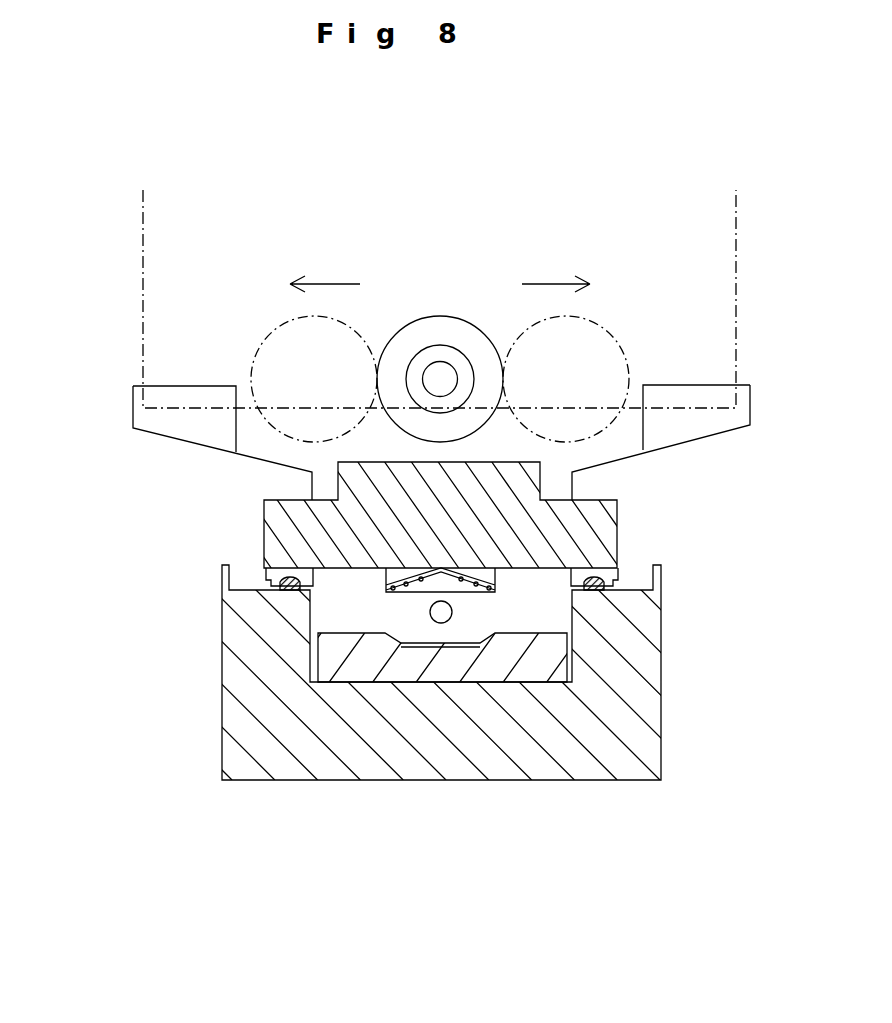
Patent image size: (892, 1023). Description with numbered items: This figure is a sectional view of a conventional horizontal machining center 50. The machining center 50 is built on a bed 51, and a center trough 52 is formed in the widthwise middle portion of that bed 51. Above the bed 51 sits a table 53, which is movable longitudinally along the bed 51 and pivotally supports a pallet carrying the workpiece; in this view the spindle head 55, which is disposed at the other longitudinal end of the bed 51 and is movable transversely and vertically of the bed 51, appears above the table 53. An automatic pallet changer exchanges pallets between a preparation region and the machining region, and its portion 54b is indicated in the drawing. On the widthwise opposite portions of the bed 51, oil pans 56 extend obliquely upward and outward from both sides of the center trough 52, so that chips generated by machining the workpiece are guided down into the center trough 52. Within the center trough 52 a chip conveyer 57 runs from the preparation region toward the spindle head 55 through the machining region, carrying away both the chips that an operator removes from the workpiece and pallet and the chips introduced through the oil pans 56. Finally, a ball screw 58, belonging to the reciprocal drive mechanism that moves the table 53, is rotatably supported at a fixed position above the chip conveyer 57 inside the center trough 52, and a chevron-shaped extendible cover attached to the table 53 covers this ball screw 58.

The horizontal machining center 50 is at (307, 197).
The bed 51 is at (650, 668).
The center trough 52 is at (342, 610).
The table 53 is at (280, 532).
The cover 54b is at (143, 271).
The spindle head 55 is at (262, 327).
The oil pan 56 is at (187, 440).
The chip conveyer 57 is at (493, 668).
The ball screw 58 is at (452, 612).